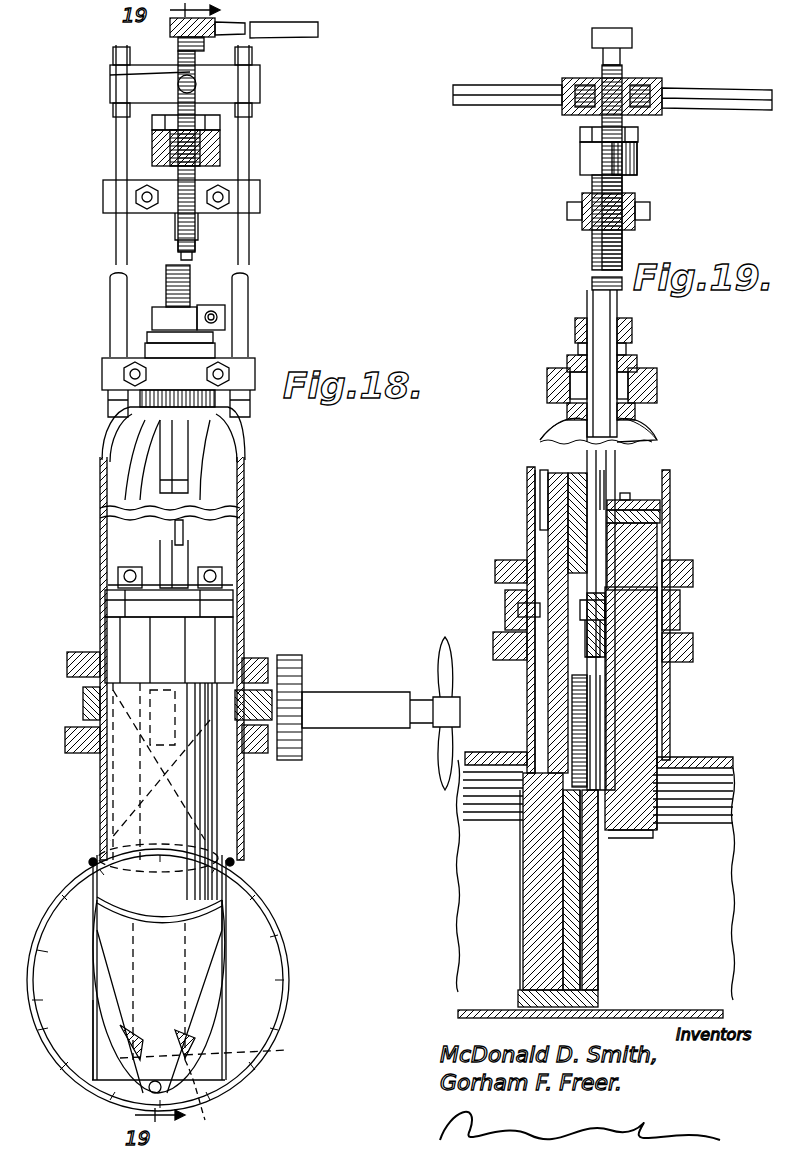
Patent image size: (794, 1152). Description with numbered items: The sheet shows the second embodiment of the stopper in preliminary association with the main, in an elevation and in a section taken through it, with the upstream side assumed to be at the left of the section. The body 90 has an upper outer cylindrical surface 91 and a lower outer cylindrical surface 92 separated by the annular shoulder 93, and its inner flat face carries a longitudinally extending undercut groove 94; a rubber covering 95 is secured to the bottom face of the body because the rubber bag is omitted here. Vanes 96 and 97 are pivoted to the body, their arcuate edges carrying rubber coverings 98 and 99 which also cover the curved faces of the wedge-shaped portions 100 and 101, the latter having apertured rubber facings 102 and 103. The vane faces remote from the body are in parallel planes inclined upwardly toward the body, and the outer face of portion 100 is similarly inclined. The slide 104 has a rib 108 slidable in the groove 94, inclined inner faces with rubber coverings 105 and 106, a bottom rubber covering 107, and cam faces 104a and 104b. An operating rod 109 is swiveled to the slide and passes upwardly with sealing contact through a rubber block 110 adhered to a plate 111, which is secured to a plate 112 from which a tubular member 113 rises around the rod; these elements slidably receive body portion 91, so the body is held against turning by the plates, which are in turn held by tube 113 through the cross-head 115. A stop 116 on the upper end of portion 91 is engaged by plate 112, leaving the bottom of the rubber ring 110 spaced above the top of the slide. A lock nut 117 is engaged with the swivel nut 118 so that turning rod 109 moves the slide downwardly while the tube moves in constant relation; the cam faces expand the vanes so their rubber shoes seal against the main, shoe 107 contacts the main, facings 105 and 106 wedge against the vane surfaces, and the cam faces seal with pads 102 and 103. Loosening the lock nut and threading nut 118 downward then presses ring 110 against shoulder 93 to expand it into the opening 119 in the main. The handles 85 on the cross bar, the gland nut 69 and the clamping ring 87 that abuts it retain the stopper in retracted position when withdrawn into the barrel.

In FIG. 18, the handles 85 is at (110, 82).
In FIG. 19, the handles 85 is at (505, 100).
In FIG. 18, the clamping ring 87 is at (160, 312).
In FIG. 19, the clamping ring 87 is at (632, 330).
In FIG. 18, the nut 69 is at (215, 338).
In FIG. 19, the nut 69 is at (637, 360).
In FIG. 18, the body 90 is at (210, 1070).
In FIG. 19, the body 90 is at (527, 540).
In FIG. 19, the upper outer cylindrical surface 91 is at (540, 625).
In FIG. 19, the lower outer cylindrical surface 92 is at (520, 878).
In FIG. 19, the annular shoulder 93 is at (500, 752).
In FIG. 19, the undercut groove 94 is at (560, 845).
In FIG. 18, the rubber covering 95 is at (165, 1093).
In FIG. 19, the rubber covering 95 is at (515, 1016).
In FIG. 18, the vane 96 is at (212, 923).
In FIG. 19, the vane 96 is at (572, 900).
In FIG. 18, the vane 97 is at (122, 947).
In FIG. 19, the vane 97 is at (590, 927).
In FIG. 18, the rubber covering 98 is at (93, 1003).
In FIG. 19, the rubber covering 98 is at (570, 1010).
In FIG. 18, the rubber covering 99 is at (222, 995).
In FIG. 19, the rubber covering 99 is at (598, 1012).
In FIG. 18, the wedge-shaped portion 100 is at (92, 1090).
In FIG. 18, the wedge-shaped portion 101 is at (221, 1051).
In FIG. 18, the rubber facing 102 is at (125, 1042).
In FIG. 18, the rubber facing 103 is at (211, 1099).
In FIG. 18, the slide 104 is at (238, 785).
In FIG. 19, the slide 104 is at (640, 687).
In FIG. 18, the cam face 104a is at (225, 850).
In FIG. 19, the cam face 104a is at (585, 712).
In FIG. 18, the cam face 104b is at (100, 790).
In FIG. 18, the rubber covering 105 is at (100, 803).
In FIG. 18, the rubber covering 106 is at (222, 820).
In FIG. 19, the rubber covering 106 is at (600, 755).
In FIG. 18, the rubber covering 107 is at (118, 915).
In FIG. 19, the rubber covering 107 is at (650, 838).
In FIG. 19, the rib 108 is at (520, 793).
In FIG. 19, the operating rod 109 is at (606, 480).
In FIG. 18, the rubber block 110 is at (190, 645).
In FIG. 19, the rubber block 110 is at (660, 545).
In FIG. 18, the plate 111 is at (105, 605).
In FIG. 19, the plate 111 is at (660, 518).
In FIG. 18, the plate 112 is at (105, 580).
In FIG. 19, the plate 112 is at (660, 505).
In FIG. 18, the tubular member 113 is at (175, 462).
In FIG. 19, the tubular member 113 is at (620, 452).
In FIG. 18, the cross-head 115 is at (245, 203).
In FIG. 19, the cross-head 115 is at (583, 225).
In FIG. 18, the stop 116 is at (210, 566).
In FIG. 19, the stop 116 is at (560, 478).
In FIG. 18, the lock nut 117 is at (220, 124).
In FIG. 19, the lock nut 117 is at (580, 131).
In FIG. 18, the swivel nut 118 is at (152, 146).
In FIG. 19, the swivel nut 118 is at (637, 160).
In FIG. 19, the opening 119 is at (520, 740).